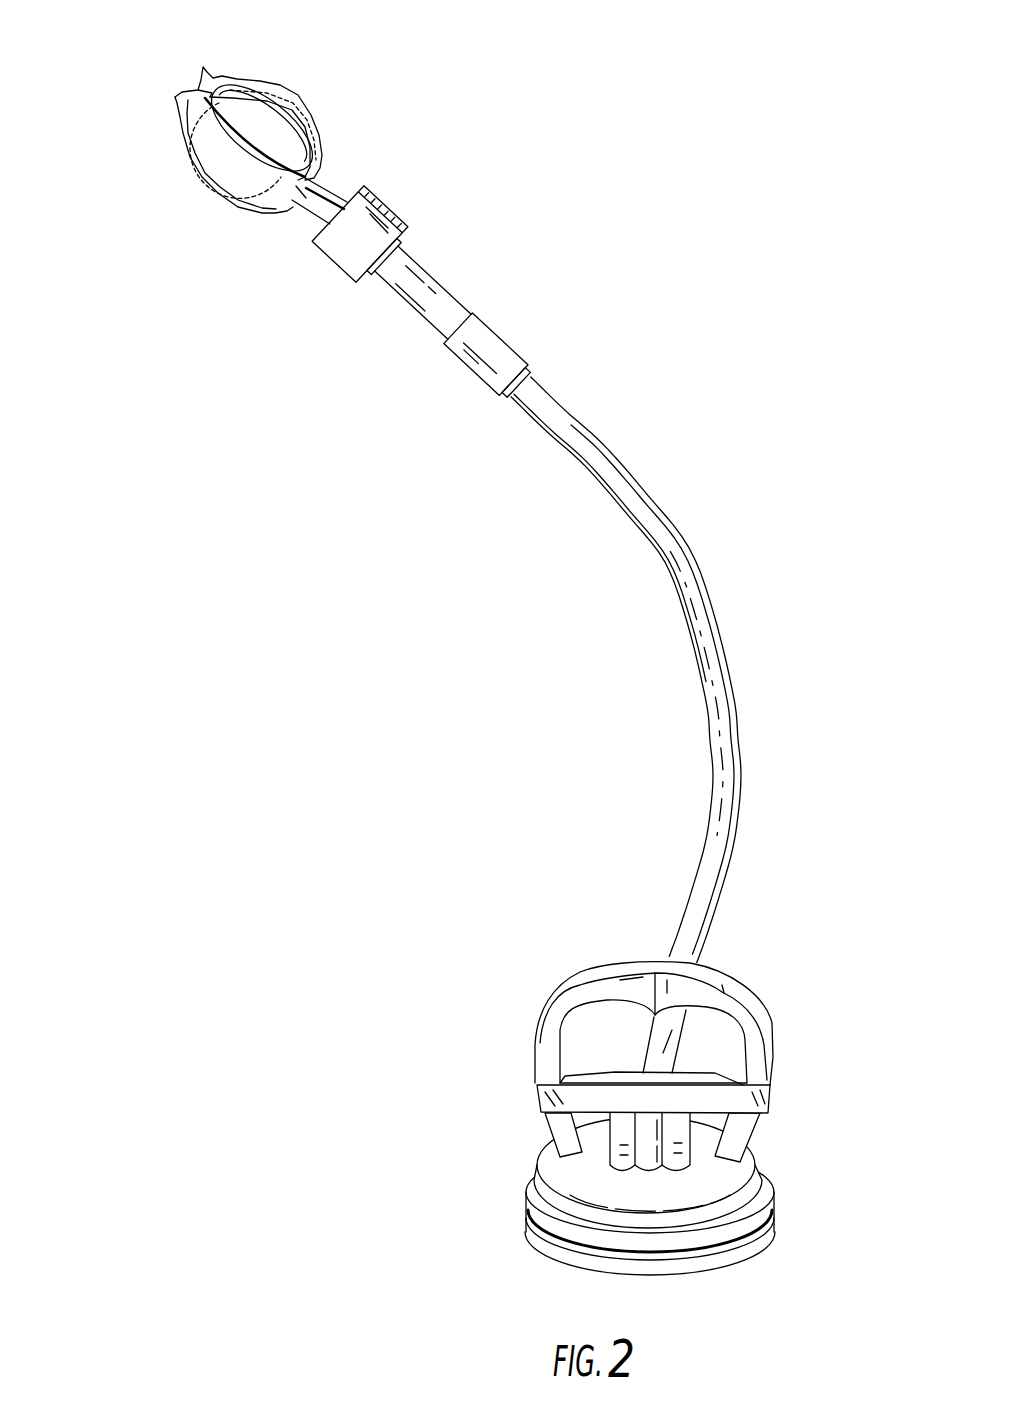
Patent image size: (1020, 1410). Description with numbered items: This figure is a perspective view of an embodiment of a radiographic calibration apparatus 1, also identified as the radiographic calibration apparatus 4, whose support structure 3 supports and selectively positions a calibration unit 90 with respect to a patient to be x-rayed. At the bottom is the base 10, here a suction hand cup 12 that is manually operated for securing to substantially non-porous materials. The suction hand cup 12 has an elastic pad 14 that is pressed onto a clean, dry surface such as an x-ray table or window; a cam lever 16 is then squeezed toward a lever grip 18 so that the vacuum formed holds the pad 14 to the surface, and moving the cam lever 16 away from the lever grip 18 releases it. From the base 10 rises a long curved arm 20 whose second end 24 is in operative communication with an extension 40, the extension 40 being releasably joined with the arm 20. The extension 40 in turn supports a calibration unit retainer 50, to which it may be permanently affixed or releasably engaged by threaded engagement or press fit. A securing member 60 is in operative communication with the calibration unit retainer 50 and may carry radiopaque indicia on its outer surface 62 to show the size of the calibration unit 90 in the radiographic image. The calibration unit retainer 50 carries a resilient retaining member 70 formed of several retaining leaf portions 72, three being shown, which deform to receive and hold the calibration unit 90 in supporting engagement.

The radiographic calibration apparatus 1 is at (693, 158).
The support structure 3 is at (470, 722).
The radiographic calibration apparatus 4 is at (333, 887).
The base 10 is at (777, 1085).
The suction hand cup 12 is at (558, 1160).
The elastic pad 14 is at (767, 1232).
The cam lever 16 is at (742, 1010).
The lever grip 18 is at (558, 1121).
The arm 20 is at (698, 552).
The second end 24 is at (513, 343).
The extension 40 is at (437, 287).
The calibration unit retainer 50 is at (227, 119).
The securing member 60 is at (390, 228).
The outer surface 62 is at (366, 258).
The retaining member 70 is at (254, 119).
The retaining leaf portions 72 is at (192, 87).
The calibration unit 90 is at (280, 134).